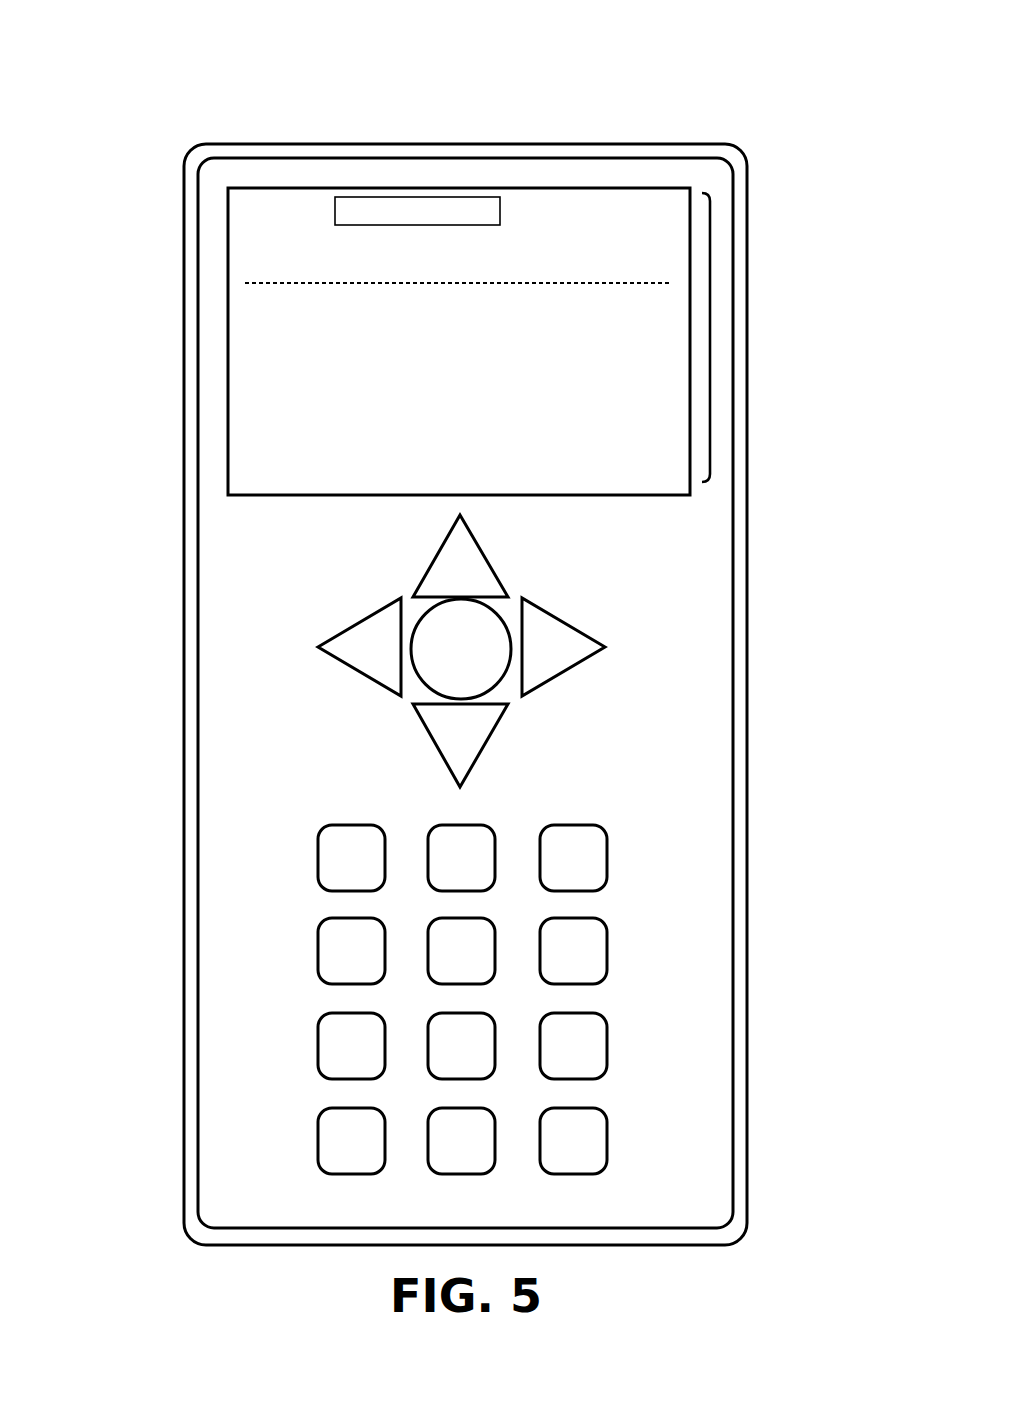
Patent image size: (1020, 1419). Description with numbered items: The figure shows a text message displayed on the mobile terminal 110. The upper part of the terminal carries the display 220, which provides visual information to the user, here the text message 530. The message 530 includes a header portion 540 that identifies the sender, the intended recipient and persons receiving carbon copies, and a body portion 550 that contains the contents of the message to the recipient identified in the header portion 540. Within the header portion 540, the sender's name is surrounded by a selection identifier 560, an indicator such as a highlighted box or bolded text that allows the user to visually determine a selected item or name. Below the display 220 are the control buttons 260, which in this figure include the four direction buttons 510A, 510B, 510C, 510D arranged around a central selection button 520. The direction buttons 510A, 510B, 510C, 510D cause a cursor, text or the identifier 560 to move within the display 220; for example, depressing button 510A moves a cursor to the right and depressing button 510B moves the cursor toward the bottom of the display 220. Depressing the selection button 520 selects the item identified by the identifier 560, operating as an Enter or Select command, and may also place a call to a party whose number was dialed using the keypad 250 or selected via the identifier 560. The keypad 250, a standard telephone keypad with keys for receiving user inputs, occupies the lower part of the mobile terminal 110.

The mobile terminal 110 is at (453, 625).
The display 220 is at (459, 290).
The keypad 250 is at (467, 947).
The control buttons 260 is at (436, 651).
The direction button 510A is at (563, 647).
The direction button 510B is at (460, 745).
The direction button 510C is at (359, 647).
The direction button 510D is at (460, 556).
The selection button 520 is at (461, 649).
The text message 530 is at (763, 337).
The header portion 540 is at (367, 229).
The body portion 550 is at (361, 399).
The selection identifier 560 is at (456, 166).